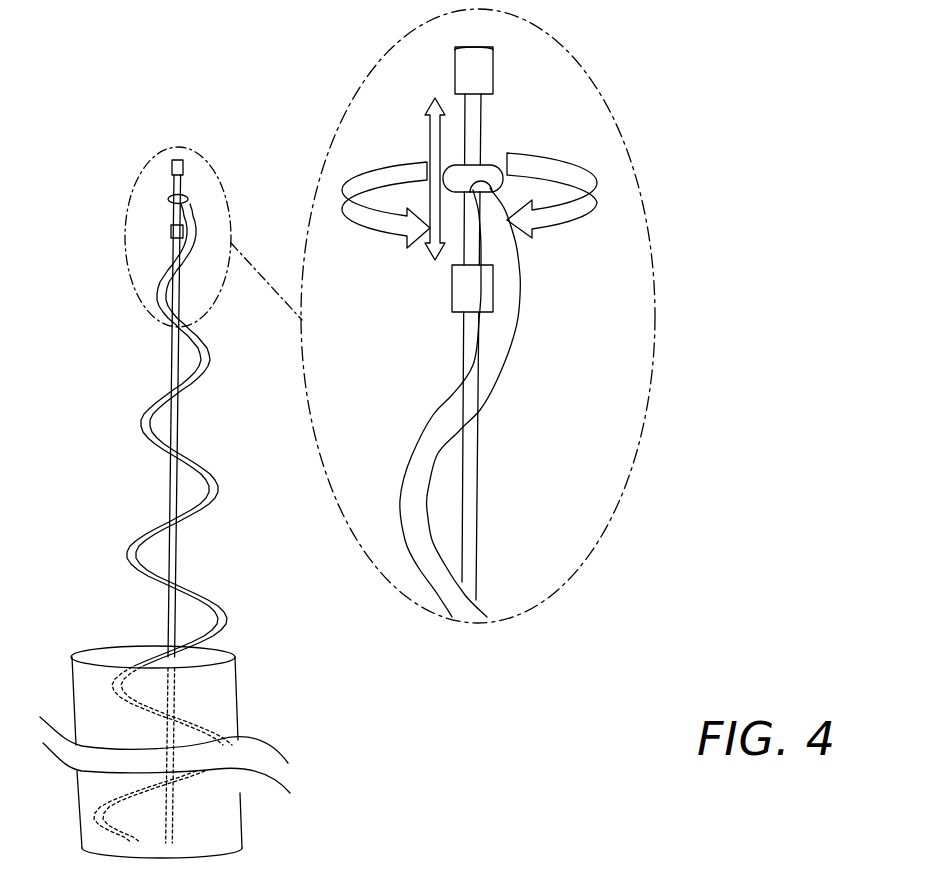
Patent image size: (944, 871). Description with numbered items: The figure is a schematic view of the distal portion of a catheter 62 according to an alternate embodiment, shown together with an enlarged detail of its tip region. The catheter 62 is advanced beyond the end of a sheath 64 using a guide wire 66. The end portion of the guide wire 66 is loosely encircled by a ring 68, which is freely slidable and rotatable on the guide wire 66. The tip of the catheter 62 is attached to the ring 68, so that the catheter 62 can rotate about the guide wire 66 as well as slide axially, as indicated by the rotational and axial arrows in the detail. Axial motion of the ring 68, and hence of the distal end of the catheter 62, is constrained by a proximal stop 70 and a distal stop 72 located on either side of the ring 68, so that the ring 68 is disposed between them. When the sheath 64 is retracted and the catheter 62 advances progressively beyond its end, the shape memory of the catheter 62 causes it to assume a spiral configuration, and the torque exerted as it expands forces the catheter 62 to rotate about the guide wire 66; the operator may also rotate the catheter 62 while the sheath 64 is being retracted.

The catheter 62 is at (140, 538).
The sheath 64 is at (237, 690).
The guide wire 66 is at (176, 550).
The ring 68 is at (495, 167).
The proximal stop 70 is at (452, 290).
The distal stop 72 is at (463, 70).